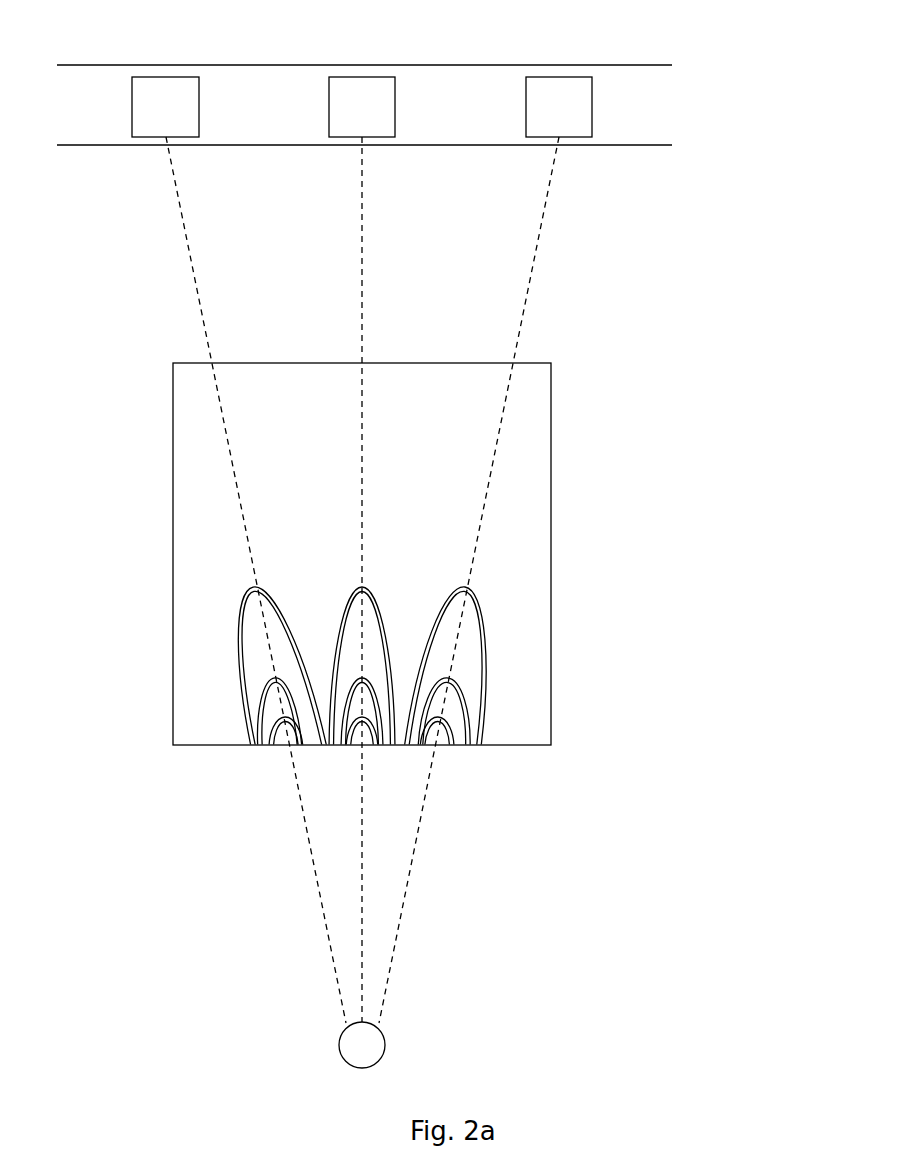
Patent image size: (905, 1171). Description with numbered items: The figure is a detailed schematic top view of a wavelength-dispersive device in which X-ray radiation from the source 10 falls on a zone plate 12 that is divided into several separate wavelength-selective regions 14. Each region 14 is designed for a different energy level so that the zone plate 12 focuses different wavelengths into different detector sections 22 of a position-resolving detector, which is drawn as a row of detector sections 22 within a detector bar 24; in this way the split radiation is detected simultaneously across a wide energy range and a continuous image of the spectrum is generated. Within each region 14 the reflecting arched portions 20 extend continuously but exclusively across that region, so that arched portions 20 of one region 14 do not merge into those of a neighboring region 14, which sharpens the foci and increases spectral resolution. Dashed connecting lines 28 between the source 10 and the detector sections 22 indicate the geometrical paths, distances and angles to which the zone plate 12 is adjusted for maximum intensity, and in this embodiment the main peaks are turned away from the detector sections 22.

The X-ray source 10 is at (385, 1053).
The zone plate 12 is at (552, 557).
The wavelength-selective region 14 is at (214, 601).
The reflecting arched portion 20 is at (243, 680).
The detector section 22 is at (165, 100).
The detector array 24 is at (655, 100).
The connecting line between source and detector 28 is at (198, 298).